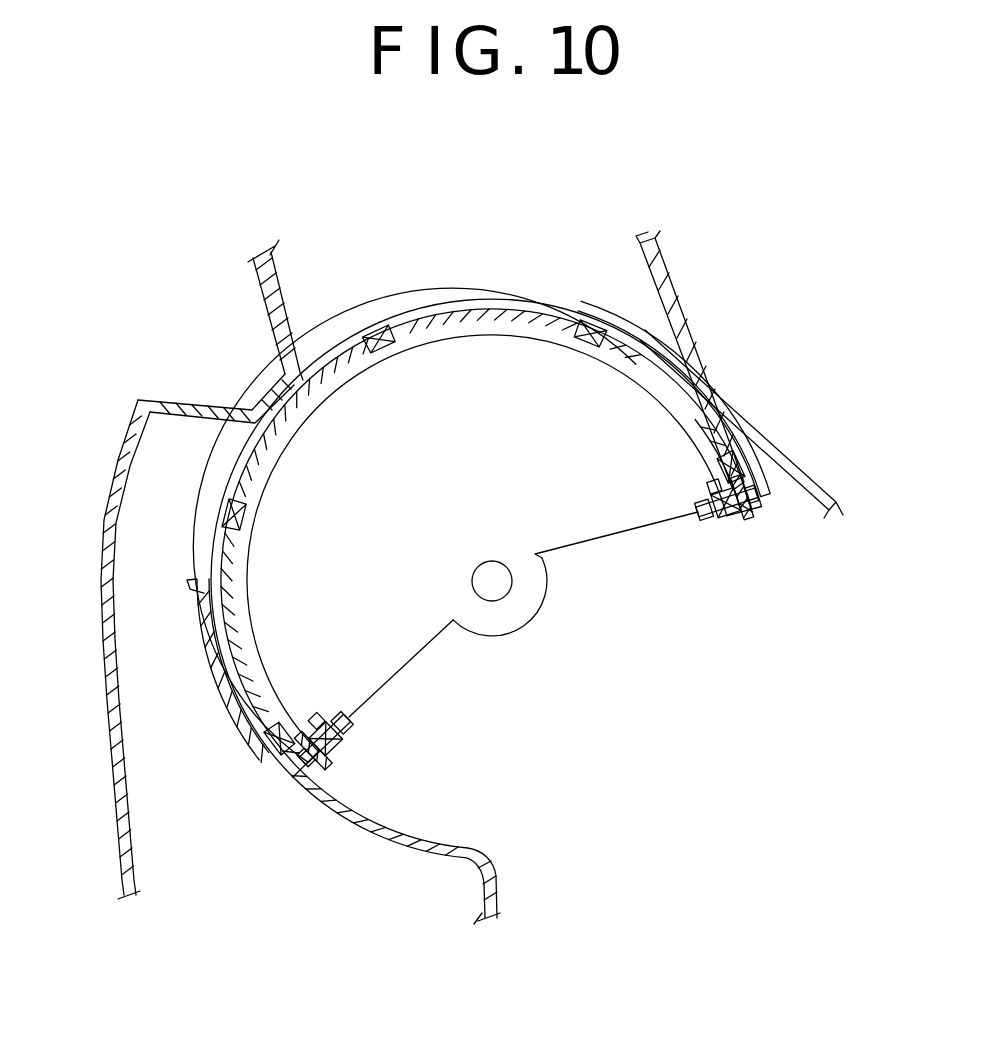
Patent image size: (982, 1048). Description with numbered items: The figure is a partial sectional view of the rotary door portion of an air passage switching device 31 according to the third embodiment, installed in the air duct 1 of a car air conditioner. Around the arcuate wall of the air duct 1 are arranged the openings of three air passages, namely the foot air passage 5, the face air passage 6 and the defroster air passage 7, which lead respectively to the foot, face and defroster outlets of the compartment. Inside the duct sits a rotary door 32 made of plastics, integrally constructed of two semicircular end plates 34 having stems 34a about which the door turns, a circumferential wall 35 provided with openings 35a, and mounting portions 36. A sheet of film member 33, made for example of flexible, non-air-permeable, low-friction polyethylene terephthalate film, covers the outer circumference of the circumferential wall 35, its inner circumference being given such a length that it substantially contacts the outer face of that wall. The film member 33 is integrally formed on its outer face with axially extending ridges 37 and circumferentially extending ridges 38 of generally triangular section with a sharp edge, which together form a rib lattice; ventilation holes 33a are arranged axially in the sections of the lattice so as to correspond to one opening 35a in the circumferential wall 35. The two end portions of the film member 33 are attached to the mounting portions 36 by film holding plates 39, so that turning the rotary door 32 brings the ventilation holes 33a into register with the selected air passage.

The air duct 1 is at (807, 477).
The foot air passage 5 is at (150, 517).
The face air passage 6 is at (313, 317).
The defroster air passage 7 is at (645, 262).
The air passage switching device 31 is at (515, 662).
The rotary door 32 is at (600, 525).
The film member 33 is at (402, 320).
The ventilation holes 33a is at (257, 427).
The semicircular end plates 34 is at (432, 647).
The stems 34a is at (513, 592).
The circumferential wall 35 is at (472, 525).
The openings 35a is at (522, 325).
The mounting portions 36 is at (693, 498).
The axially extending ridges 37 is at (380, 333).
The circumferential ridges 38 is at (617, 328).
The film holding plates 39 is at (710, 535).